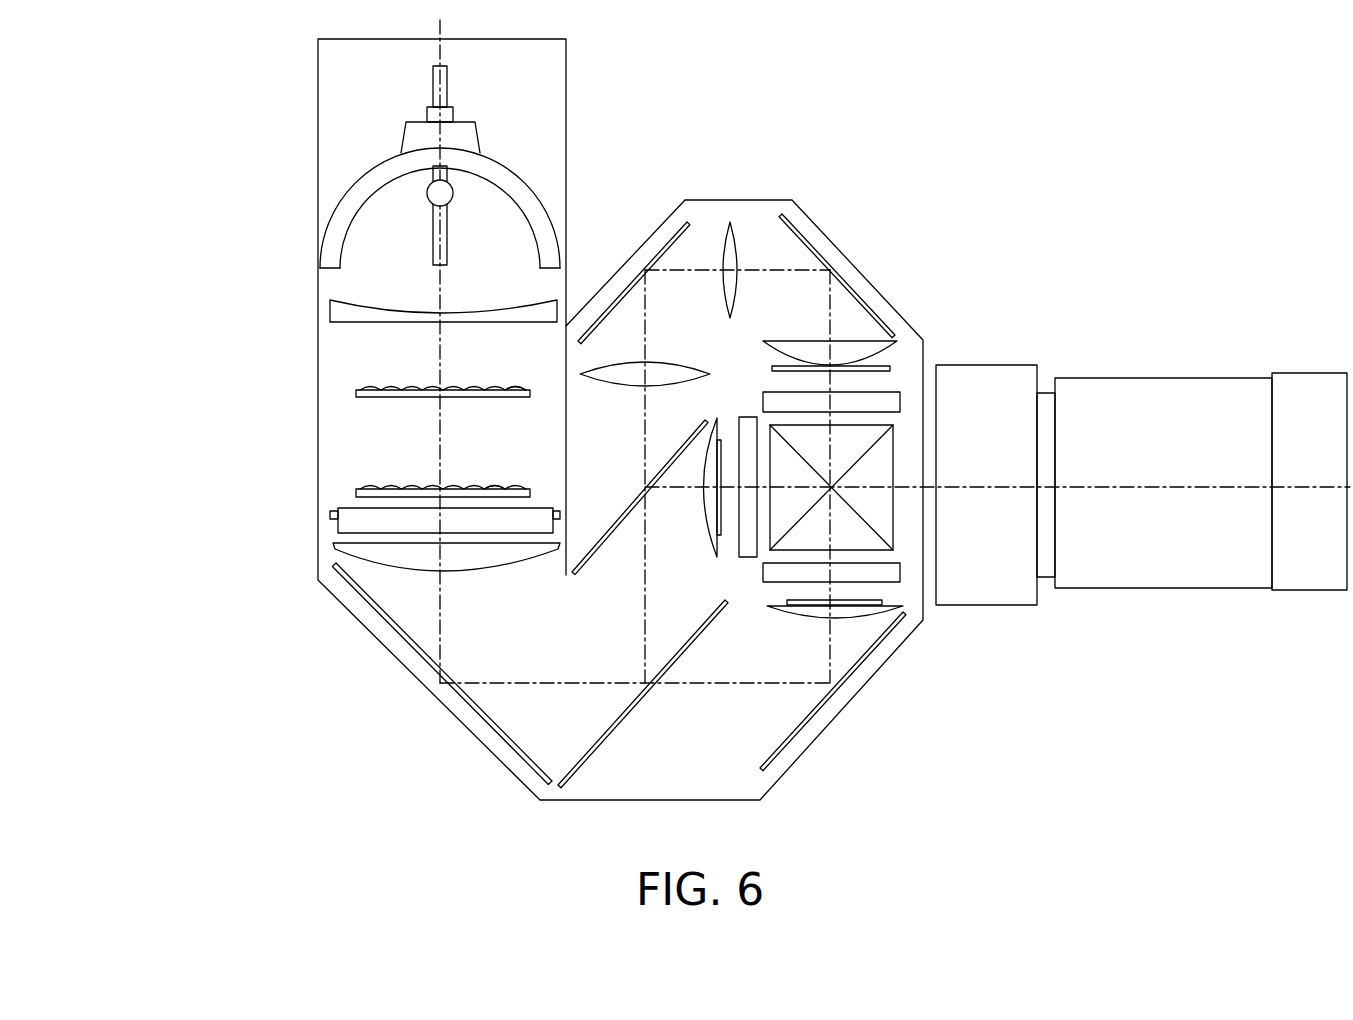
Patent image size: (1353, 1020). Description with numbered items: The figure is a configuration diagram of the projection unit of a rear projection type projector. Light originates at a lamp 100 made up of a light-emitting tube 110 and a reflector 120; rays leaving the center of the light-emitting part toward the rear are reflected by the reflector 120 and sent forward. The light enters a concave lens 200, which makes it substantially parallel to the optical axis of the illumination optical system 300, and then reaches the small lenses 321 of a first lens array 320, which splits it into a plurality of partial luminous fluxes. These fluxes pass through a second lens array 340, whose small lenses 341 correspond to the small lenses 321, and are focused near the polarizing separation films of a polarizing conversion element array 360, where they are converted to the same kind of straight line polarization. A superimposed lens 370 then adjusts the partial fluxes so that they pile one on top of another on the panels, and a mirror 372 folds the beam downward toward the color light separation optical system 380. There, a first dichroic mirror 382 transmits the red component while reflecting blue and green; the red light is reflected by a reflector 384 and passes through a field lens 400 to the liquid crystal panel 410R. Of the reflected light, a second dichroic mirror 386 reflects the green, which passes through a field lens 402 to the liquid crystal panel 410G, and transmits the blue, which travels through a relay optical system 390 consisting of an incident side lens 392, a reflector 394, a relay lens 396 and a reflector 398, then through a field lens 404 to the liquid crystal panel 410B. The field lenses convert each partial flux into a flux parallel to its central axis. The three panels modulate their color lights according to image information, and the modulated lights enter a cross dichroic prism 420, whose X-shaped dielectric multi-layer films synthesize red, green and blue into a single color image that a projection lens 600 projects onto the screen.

The lamp 100 is at (309, 167).
The light-emitting tube 110 is at (427, 192).
The reflector 120 is at (392, 170).
The concave lens 200 is at (330, 316).
The illumination optical system 300 is at (310, 480).
The first lens array 320 is at (356, 397).
The small lens 321 is at (529, 398).
The second lens array 340 is at (358, 494).
The small lens 341 is at (505, 488).
The polarizing conversion element array 360 is at (332, 516).
The superimposed lens 370 is at (334, 552).
The reflecting mirror 372 is at (378, 617).
The color light separation optical system 380 is at (587, 671).
The first dichroic mirror 382 is at (648, 688).
The reflector 384 is at (772, 750).
The second dichroic mirror 386 is at (610, 530).
The relay optical system 390 is at (750, 243).
The incident side lens 392 is at (603, 387).
The reflector 394 is at (620, 297).
The relay lens 396 is at (737, 292).
The reflector 398 is at (829, 260).
The field lens 400 is at (780, 612).
The field lens 402 is at (703, 492).
The field lens 404 is at (812, 340).
The liquid crystal panel 410B is at (763, 392).
The liquid crystal panel 410G is at (748, 418).
The liquid crystal panel 410R is at (764, 581).
The cross dichroic prism 420 is at (897, 525).
The projection lens 600 is at (1152, 372).